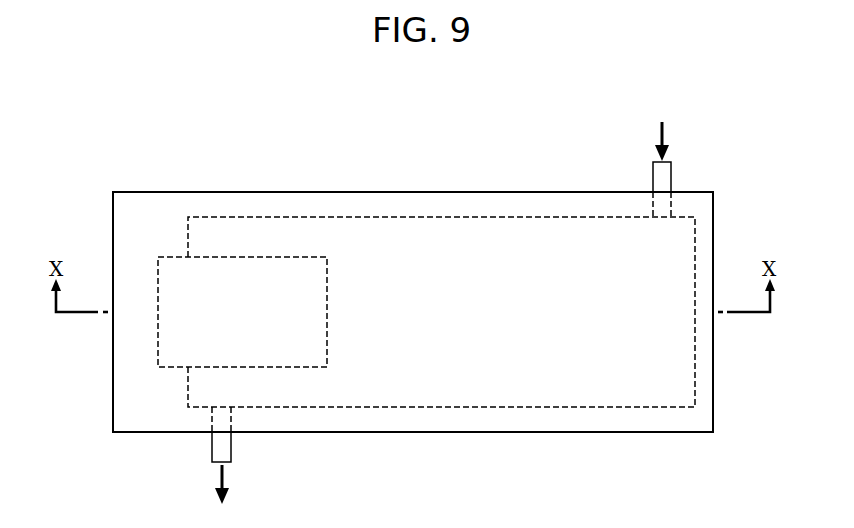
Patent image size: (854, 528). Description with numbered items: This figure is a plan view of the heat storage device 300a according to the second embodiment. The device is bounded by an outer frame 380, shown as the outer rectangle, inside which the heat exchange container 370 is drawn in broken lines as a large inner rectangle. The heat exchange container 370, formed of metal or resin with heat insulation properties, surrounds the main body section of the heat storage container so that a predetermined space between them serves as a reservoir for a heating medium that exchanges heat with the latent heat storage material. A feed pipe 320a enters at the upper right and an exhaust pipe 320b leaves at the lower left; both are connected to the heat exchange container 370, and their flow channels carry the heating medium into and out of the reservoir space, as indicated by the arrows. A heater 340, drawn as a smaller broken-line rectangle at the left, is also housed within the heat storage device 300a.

The heat storage device 300a is at (557, 63).
The feed pipe 320a is at (672, 178).
The exhaust pipe 320b is at (232, 446).
The heater 340 is at (177, 257).
The heat exchange container 370 is at (387, 216).
The outer frame 380 is at (487, 200).